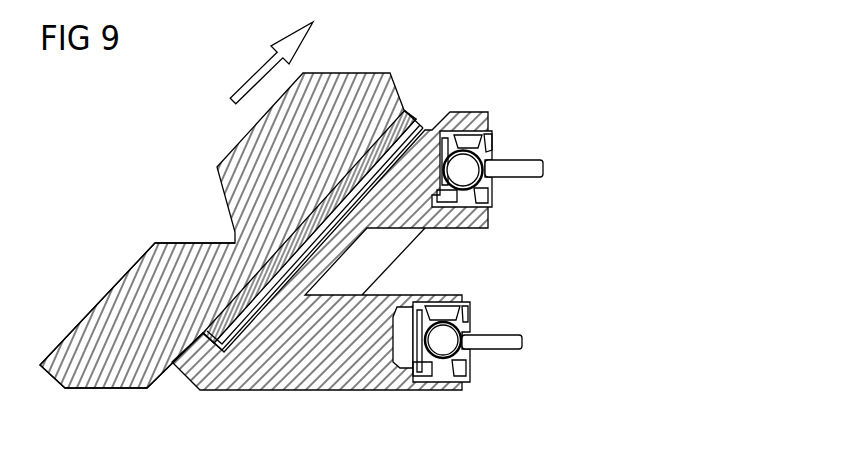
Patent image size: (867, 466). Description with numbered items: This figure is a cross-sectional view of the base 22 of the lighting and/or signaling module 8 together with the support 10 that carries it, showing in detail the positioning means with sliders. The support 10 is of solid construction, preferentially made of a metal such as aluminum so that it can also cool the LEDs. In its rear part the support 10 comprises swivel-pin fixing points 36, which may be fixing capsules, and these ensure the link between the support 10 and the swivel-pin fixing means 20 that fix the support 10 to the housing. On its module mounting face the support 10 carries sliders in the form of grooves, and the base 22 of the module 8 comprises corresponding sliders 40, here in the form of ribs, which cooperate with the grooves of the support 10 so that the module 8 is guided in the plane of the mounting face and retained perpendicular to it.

The lighting and/or signaling module 8 is at (173, 184).
The support 10 is at (316, 392).
The swivel-pin fixing means 20 is at (519, 168).
The base 22 is at (103, 295).
The swivel-pin fixing points 36 is at (468, 178).
The sliders 40 is at (421, 124).